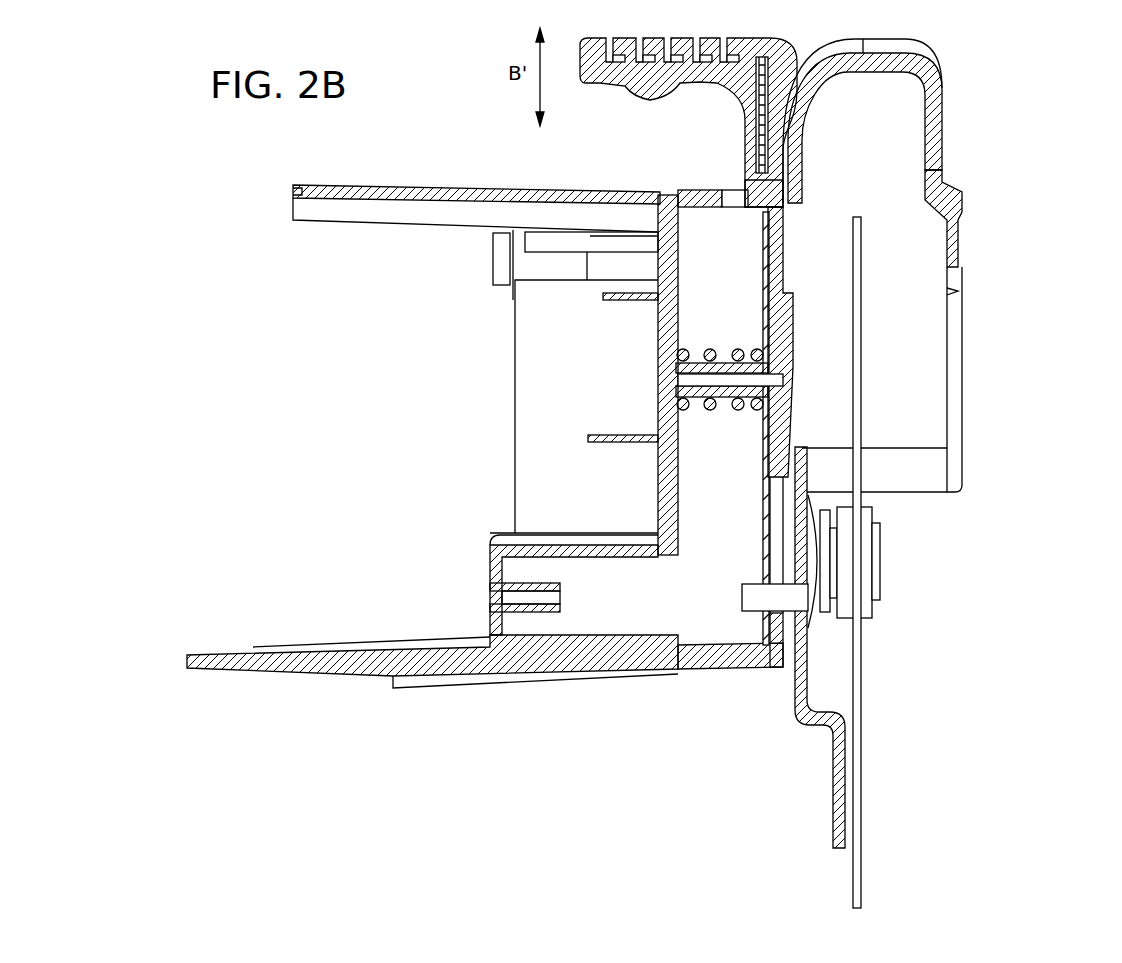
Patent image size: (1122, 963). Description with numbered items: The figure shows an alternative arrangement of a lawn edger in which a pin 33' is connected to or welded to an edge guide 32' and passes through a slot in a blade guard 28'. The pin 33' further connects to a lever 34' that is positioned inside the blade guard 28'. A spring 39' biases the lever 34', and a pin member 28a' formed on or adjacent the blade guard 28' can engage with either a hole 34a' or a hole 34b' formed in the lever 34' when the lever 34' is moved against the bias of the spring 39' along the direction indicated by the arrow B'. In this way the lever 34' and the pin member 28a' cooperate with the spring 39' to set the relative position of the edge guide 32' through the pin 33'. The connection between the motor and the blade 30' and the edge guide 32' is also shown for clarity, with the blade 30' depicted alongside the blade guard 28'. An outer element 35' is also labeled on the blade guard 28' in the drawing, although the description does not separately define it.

The blade guard 28' is at (951, 272).
The pin member 28a' is at (711, 173).
The blade 30' is at (951, 562).
The edge guide 32' is at (770, 665).
The pin 33' is at (734, 685).
The lever 34' is at (688, 341).
The hole 34a' is at (741, 437).
The hole 34b' is at (721, 425).
The cover 35' is at (867, 114).
The spring 39' is at (729, 412).